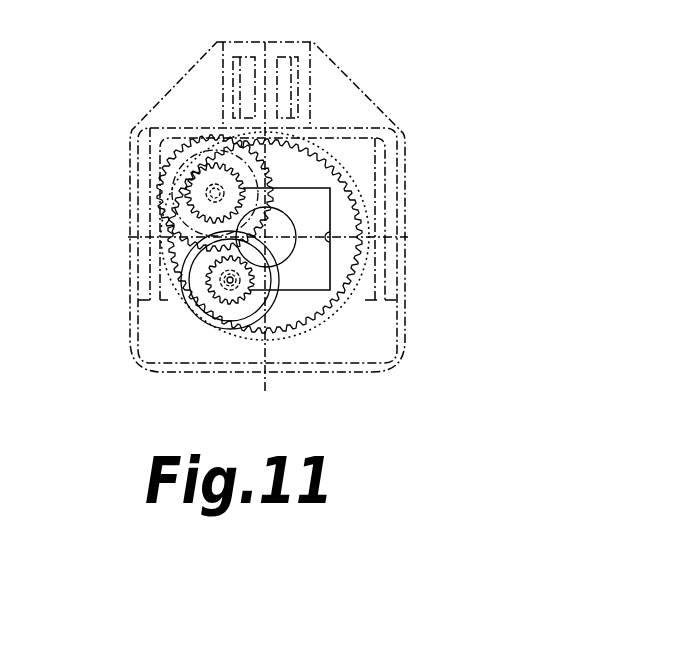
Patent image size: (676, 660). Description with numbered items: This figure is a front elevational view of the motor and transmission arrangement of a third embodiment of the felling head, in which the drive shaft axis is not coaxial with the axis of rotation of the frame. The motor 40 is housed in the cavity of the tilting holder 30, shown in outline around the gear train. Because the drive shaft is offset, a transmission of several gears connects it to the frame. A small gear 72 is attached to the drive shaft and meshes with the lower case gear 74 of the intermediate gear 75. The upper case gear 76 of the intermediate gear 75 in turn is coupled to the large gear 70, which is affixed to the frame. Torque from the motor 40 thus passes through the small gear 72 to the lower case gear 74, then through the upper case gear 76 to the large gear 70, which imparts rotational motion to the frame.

The tilting holder 30 is at (168, 93).
The motor 40 is at (245, 320).
The large gear 70 is at (328, 324).
The small gear 72 is at (230, 318).
The lower case gear 74 is at (183, 162).
The intermediate gear 75 is at (160, 191).
The upper case gear 76 is at (195, 186).